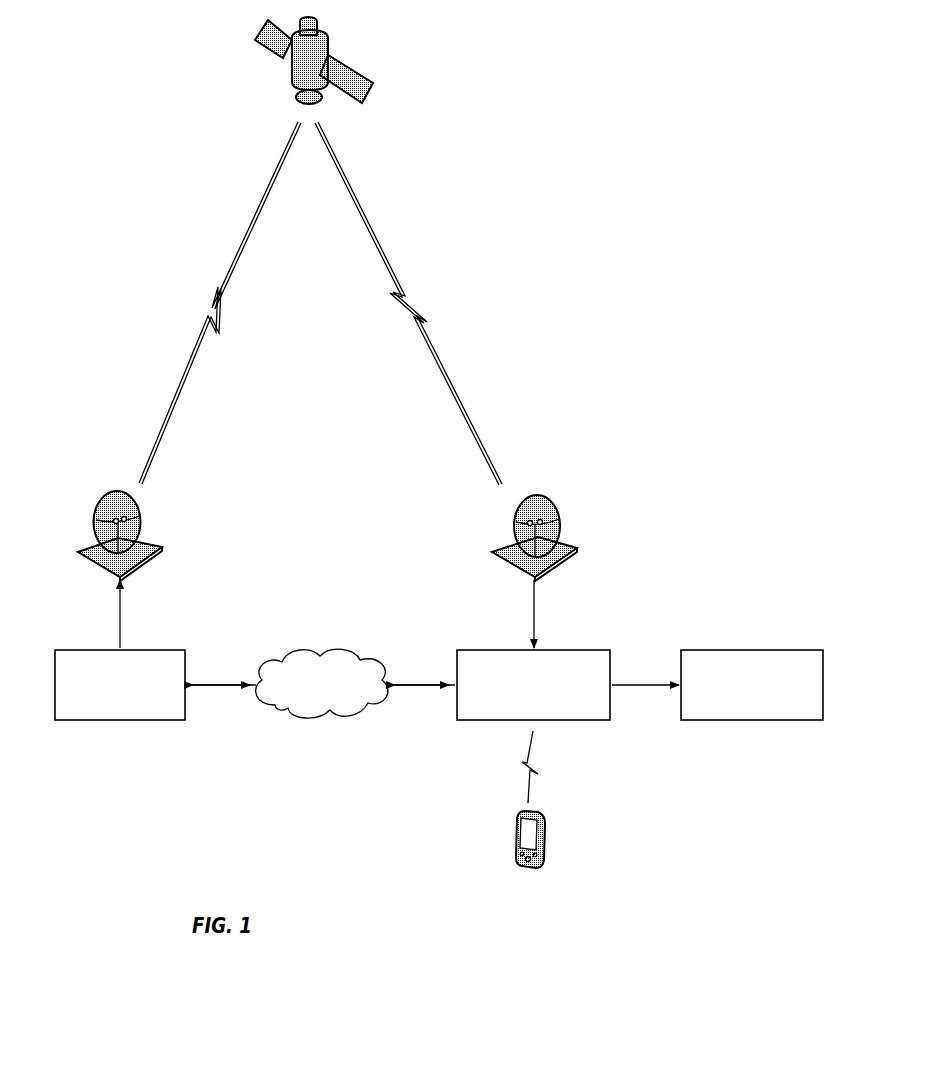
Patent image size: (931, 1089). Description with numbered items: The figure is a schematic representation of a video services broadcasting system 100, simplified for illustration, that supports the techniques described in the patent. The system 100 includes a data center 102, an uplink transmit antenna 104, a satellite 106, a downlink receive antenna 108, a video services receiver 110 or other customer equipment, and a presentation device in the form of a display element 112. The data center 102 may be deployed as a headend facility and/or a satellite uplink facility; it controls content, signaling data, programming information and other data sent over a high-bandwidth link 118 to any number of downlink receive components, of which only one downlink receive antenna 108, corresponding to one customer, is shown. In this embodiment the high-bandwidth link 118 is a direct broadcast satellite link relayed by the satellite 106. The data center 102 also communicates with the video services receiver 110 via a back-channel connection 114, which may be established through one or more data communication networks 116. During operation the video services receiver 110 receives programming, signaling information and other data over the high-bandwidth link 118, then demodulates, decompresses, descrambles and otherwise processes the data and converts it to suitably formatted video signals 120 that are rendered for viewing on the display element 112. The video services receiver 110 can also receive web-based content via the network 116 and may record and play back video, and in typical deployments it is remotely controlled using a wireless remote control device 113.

The video services broadcasting system 100 is at (560, 38).
The data center 102 is at (118, 722).
The uplink transmit antenna 104 is at (96, 518).
The satellite 106 is at (373, 88).
The downlink receive antenna 108 is at (560, 527).
The video services receiver 110 is at (475, 722).
The display element 112 is at (752, 650).
The wireless remote control device 113 is at (548, 840).
The back-channel connection 114 is at (278, 628).
The data communication network 116 is at (323, 652).
The high-bandwidth link 118 is at (208, 312).
The video signals 120 is at (644, 686).